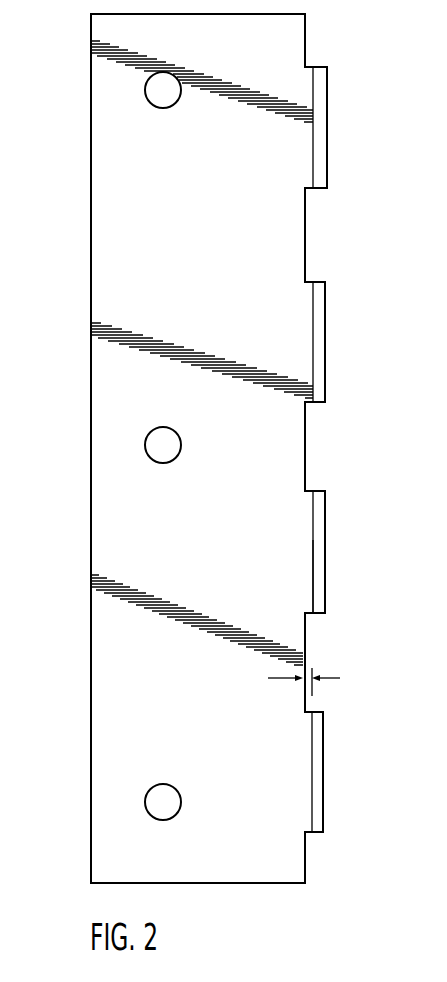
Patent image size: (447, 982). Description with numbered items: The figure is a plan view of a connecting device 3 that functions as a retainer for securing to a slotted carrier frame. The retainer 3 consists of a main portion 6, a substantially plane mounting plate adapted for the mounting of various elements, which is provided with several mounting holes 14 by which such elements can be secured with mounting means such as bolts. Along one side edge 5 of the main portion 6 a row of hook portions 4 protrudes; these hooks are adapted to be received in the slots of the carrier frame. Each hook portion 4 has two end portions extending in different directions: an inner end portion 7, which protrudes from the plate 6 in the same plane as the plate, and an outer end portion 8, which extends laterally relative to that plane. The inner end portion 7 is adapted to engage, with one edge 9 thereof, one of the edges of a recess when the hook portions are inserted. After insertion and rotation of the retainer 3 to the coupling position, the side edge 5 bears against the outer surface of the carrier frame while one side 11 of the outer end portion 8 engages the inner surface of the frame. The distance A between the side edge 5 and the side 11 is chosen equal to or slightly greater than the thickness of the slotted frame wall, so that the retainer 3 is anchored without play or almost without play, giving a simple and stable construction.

The connecting device 3 is at (112, 307).
The hook portions 4 is at (336, 122).
The side edge 5 is at (306, 462).
The main portion 6 is at (110, 190).
The inner end portion 7 is at (306, 301).
The outer end portion 8 is at (326, 362).
The edge 9 is at (307, 404).
The side 11 is at (313, 564).
The mounting holes 14 is at (163, 108).
The distance A is at (304, 675).